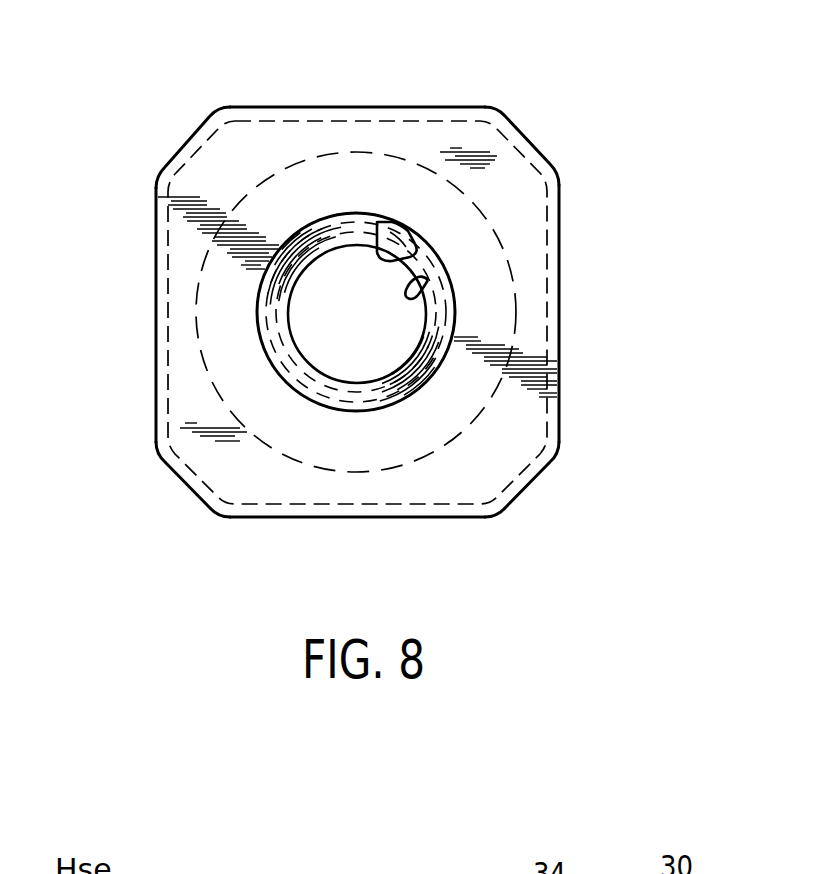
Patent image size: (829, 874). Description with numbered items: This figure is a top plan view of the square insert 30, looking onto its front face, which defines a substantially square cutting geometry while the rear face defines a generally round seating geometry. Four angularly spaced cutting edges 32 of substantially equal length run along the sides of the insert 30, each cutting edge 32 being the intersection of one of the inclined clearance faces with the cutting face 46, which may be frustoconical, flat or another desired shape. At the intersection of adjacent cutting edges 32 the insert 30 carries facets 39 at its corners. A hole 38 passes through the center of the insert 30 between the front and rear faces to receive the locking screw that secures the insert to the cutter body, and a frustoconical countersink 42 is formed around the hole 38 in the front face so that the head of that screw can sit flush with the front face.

The square insert 30 is at (351, 285).
The cutting edge 32 is at (373, 107).
The facet 39 is at (182, 128).
The cutting face 46 is at (448, 114).
The frustoconical countersink 42 is at (485, 208).
The hole 38 is at (505, 256).